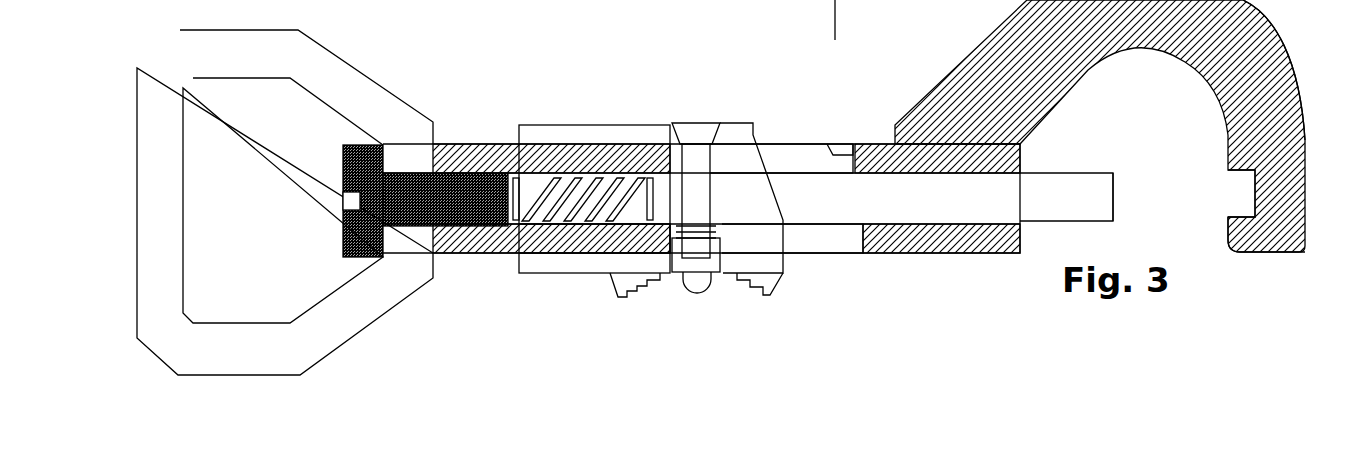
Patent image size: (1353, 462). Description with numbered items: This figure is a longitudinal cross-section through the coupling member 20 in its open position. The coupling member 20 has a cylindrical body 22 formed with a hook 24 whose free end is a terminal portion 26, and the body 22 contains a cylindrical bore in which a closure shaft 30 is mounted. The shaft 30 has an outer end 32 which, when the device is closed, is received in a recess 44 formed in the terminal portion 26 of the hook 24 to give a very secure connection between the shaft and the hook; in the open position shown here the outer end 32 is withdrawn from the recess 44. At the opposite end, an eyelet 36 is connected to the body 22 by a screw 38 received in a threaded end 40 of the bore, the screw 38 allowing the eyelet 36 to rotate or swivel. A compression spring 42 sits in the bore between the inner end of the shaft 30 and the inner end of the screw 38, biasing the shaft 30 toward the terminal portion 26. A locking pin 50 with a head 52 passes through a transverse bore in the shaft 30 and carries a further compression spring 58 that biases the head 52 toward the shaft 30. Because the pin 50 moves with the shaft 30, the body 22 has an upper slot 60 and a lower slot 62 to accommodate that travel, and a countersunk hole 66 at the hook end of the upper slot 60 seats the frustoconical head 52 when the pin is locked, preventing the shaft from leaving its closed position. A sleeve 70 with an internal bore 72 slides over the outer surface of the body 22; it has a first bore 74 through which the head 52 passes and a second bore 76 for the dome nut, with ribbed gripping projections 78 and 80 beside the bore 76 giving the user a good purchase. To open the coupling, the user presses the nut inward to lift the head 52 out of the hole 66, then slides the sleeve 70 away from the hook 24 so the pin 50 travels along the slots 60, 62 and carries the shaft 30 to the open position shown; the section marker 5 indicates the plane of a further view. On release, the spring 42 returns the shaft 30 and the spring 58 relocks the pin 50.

The section line of FIG. 5 is at (835, 40).
The coupling member 20 is at (918, 73).
The cylindrical body 22 is at (468, 133).
The hook 24 is at (1271, 45).
The terminal portion 26 is at (1267, 252).
The closure shaft 30 is at (1072, 161).
The outer end 32 is at (1125, 205).
The eyelet 36 is at (338, 46).
The screw 38 is at (332, 178).
The threaded end 40 is at (470, 244).
The compression spring 42 is at (570, 239).
The recess 44 is at (1232, 214).
The locking pin 50 is at (698, 148).
The head 52 is at (675, 109).
The compression spring 58 is at (728, 244).
The upper slot 60 is at (802, 144).
The lower slot 62 is at (828, 252).
The countersunk hole 66 is at (843, 134).
The sleeve 70 is at (593, 133).
The internal bore 72 is at (548, 162).
The first bore 74 is at (728, 120).
The second bore 76 is at (729, 276).
The gripping projection 78 is at (637, 307).
The gripping projection 80 is at (752, 306).